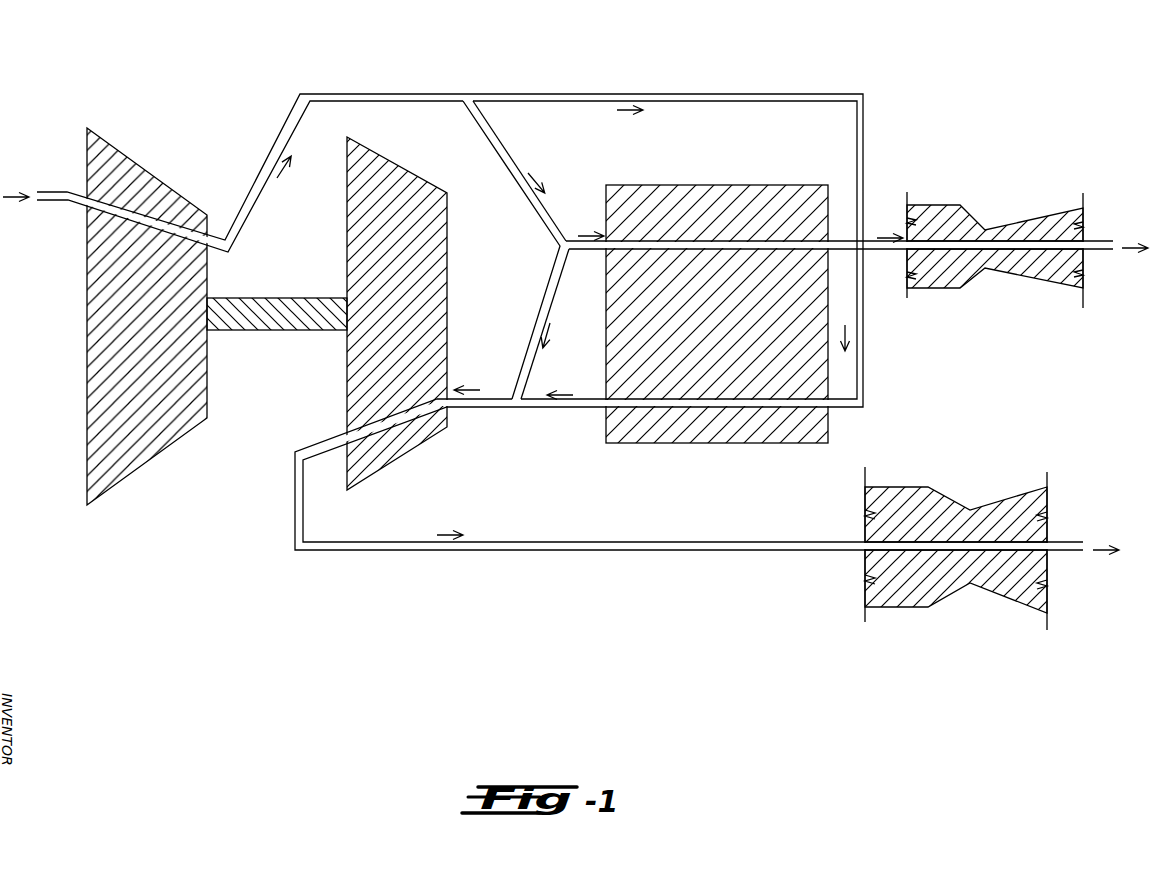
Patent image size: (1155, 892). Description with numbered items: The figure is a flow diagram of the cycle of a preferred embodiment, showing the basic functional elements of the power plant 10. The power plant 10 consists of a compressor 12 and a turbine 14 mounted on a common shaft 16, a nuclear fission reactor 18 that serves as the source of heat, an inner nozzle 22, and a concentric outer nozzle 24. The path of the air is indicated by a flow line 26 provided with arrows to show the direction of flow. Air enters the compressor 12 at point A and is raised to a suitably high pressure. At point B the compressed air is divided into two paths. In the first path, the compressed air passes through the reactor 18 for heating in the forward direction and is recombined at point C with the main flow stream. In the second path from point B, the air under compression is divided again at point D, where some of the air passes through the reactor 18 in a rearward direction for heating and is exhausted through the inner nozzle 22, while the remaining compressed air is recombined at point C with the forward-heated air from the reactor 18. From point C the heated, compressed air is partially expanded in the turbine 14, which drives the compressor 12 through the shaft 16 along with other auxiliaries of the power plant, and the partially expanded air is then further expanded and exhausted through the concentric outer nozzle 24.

The power plant 10 is at (575, 327).
The compressor 12 is at (140, 167).
The turbine 14 is at (450, 272).
The shaft 16 is at (277, 298).
The nuclear fission reactor 18 is at (763, 187).
The inner nozzle 22 is at (1033, 220).
The concentric outer nozzle 24 is at (998, 502).
The flow line 26 is at (275, 147).
The compressor inlet point A is at (40, 202).
The flow division point B is at (457, 105).
The flow recombination point C is at (515, 407).
The second flow division point D is at (558, 253).